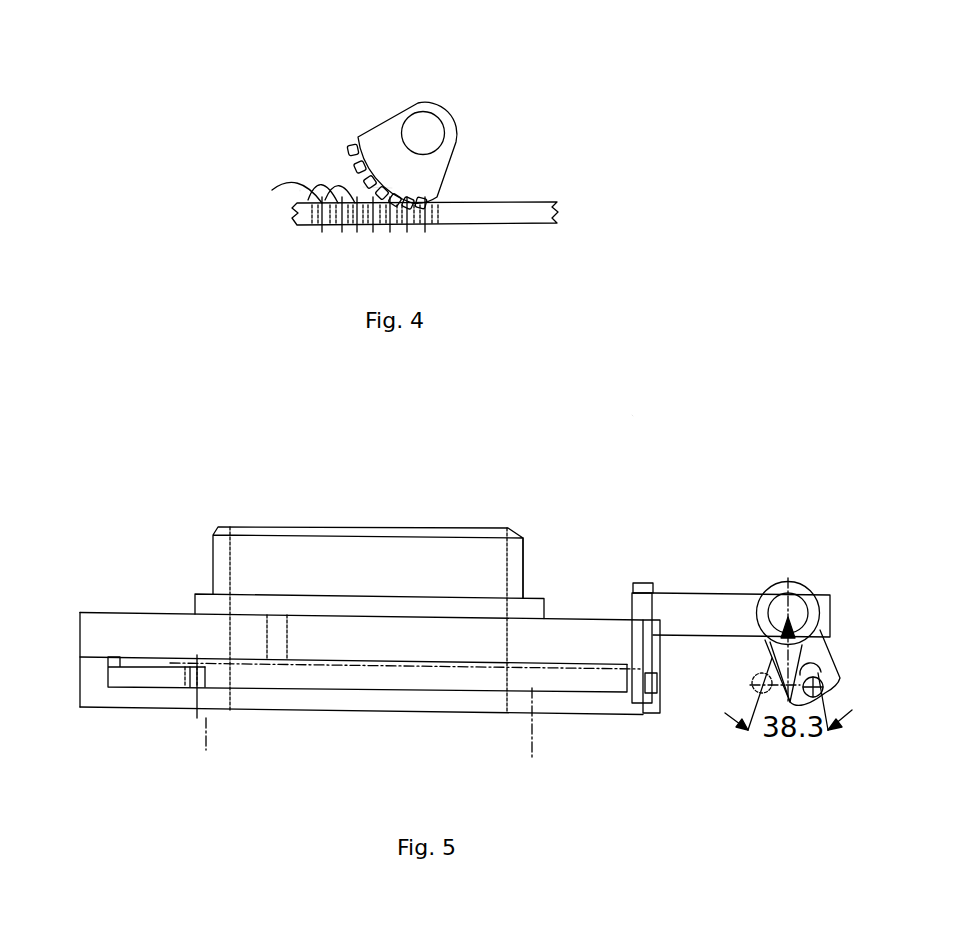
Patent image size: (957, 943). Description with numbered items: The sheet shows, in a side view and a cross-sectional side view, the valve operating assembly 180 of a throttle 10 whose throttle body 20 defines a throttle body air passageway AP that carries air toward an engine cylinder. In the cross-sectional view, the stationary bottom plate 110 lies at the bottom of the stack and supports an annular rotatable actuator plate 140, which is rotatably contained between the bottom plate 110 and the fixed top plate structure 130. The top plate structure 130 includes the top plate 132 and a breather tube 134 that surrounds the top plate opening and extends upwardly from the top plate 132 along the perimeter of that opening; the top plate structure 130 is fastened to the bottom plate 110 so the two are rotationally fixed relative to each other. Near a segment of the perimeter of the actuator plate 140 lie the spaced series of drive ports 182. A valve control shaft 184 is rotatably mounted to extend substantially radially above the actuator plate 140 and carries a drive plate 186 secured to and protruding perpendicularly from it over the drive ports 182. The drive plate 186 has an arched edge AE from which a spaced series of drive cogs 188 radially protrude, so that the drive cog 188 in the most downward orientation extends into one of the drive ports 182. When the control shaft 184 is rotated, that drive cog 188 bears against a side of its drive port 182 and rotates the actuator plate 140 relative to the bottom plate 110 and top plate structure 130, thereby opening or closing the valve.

In FIG. 5, the throttle 10 is at (632, 415).
In FIG. 5, the throttle body 20 is at (80, 672).
In FIG. 5, the stationary bottom plate 110 is at (85, 688).
In FIG. 5, the top plate structure 130 is at (145, 612).
In FIG. 5, the top plate 132 is at (118, 612).
In FIG. 5, the breather tube 134 is at (518, 570).
In FIG. 4, the actuator plate 140 is at (487, 202).
In FIG. 5, the actuator plate 140 is at (573, 682).
In FIG. 4, the valve operating assembly 180 is at (233, 117).
In FIG. 4, the drive ports 182 is at (284, 187).
In FIG. 5, the drive ports 182 is at (658, 692).
In FIG. 4, the valve control shaft 184 is at (430, 133).
In FIG. 5, the valve control shaft 184 is at (697, 605).
In FIG. 4, the drive plate 186 is at (380, 133).
In FIG. 5, the drive plate 186 is at (645, 583).
In FIG. 4, the drive cogs 188 is at (350, 147).
In FIG. 5, the drive cogs 188 is at (830, 680).
In FIG. 4, the arched edge AE is at (363, 187).
In FIG. 5, the throttle body air passageway AP is at (432, 518).